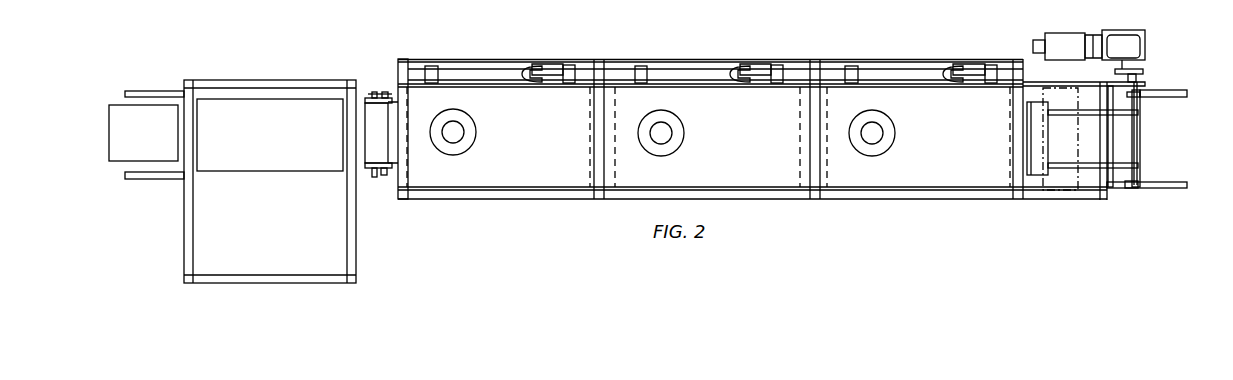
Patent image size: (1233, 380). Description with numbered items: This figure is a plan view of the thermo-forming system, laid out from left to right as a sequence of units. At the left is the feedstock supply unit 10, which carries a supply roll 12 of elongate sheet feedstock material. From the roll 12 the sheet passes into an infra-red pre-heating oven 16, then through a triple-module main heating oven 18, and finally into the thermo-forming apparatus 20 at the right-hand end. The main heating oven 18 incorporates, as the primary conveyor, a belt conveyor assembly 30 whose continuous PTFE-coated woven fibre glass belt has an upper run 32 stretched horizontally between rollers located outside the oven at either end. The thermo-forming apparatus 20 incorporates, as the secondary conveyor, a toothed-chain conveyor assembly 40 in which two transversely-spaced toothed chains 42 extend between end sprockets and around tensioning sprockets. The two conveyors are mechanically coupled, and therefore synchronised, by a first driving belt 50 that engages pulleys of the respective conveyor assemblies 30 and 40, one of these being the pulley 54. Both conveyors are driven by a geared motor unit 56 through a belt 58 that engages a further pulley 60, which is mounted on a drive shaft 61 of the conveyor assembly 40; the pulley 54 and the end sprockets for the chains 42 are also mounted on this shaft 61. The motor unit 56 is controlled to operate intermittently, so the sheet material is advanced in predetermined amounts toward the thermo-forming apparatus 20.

The feedstock supply unit 10 is at (152, 85).
The supply roll 12 is at (122, 163).
The infra-red pre-heating oven 16 is at (285, 78).
The main heating oven 18 is at (614, 50).
The thermo-forming apparatus 20 is at (1095, 127).
The belt conveyor assembly 30 is at (380, 145).
The upper run 32 is at (392, 108).
The toothed-chain conveyor assembly 40 is at (1151, 135).
The toothed chains 42 is at (1088, 165).
The first driving belt 50 is at (1060, 82).
The pulley 54 is at (1146, 80).
The geared motor unit 56 is at (1062, 38).
The belt 58 is at (1144, 72).
The pulley 60 is at (1141, 70).
The drive shaft 61 is at (1141, 143).